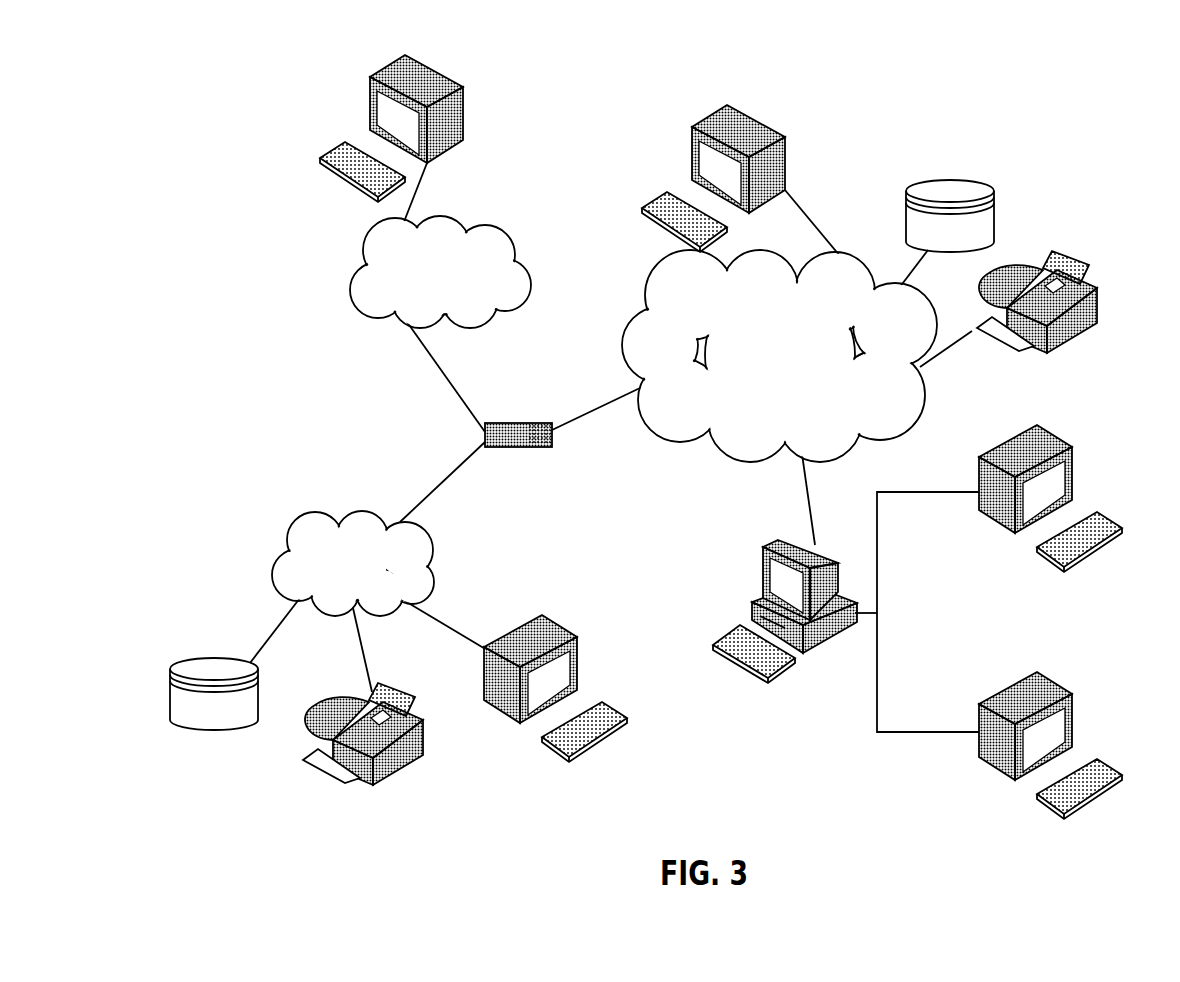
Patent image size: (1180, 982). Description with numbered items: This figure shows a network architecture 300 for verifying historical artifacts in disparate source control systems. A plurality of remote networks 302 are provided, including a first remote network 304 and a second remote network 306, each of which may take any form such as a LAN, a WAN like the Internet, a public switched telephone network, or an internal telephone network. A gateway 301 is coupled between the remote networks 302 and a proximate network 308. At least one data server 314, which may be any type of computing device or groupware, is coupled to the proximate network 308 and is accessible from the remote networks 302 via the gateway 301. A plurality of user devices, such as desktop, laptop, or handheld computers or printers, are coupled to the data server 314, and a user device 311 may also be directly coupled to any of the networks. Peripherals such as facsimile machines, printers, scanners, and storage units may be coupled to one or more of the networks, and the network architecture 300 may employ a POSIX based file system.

The network architecture 300 is at (708, 31).
The gateway 301 is at (518, 422).
The remote networks 302 is at (333, 355).
The first remote network 304 is at (273, 542).
The second remote network 306 is at (533, 279).
The proximate network 308 is at (902, 416).
The user device 311 is at (786, 172).
The data server 314 is at (760, 570).